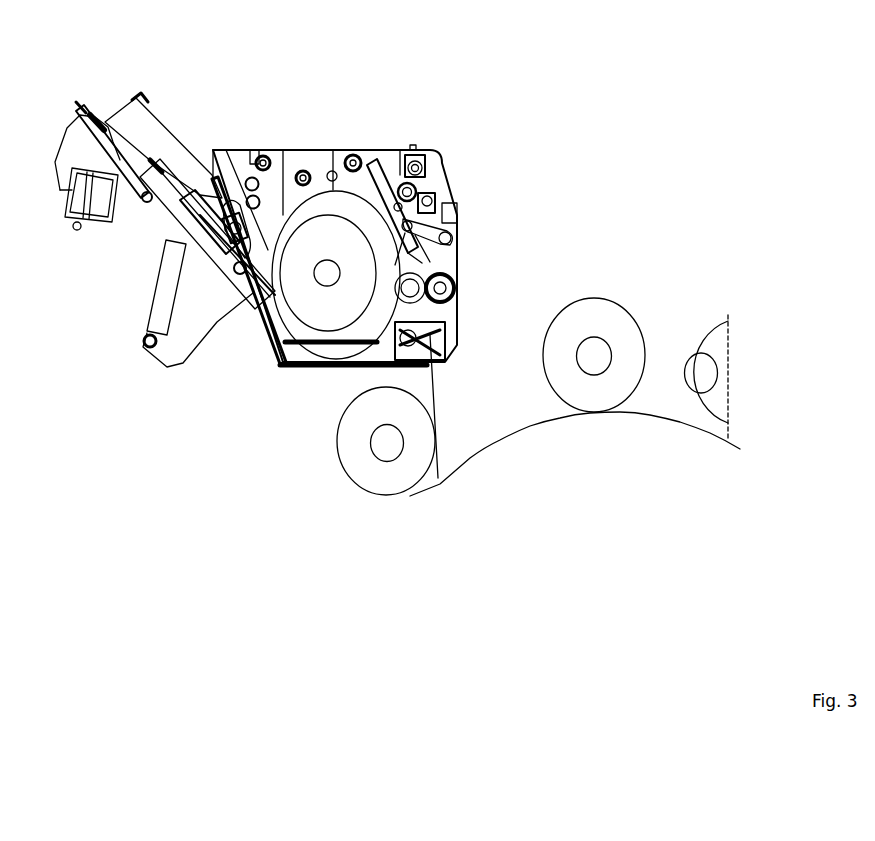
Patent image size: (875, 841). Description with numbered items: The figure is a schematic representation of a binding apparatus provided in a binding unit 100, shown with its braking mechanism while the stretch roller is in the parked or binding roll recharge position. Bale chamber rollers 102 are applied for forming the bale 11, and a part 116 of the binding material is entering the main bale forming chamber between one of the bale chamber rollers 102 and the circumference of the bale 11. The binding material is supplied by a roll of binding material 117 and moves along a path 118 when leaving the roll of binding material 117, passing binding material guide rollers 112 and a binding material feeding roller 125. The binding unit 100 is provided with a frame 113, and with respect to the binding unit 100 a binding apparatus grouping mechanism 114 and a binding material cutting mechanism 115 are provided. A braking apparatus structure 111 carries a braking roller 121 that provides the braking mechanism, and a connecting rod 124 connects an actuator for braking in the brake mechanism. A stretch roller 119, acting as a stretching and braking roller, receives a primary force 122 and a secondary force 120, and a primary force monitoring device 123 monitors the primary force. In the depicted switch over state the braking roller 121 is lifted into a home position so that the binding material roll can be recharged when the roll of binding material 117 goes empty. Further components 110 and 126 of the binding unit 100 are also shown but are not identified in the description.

The bale 11 is at (594, 482).
The binding unit 100 is at (335, 197).
The bale chamber rollers 102 is at (600, 320).
The cover plate 110 is at (167, 170).
The braking apparatus structure 111 is at (213, 190).
The binding material guide rollers 112 is at (263, 155).
The frame 113 is at (317, 170).
The binding apparatus grouping mechanism 114 is at (380, 170).
The binding material cutting mechanism 115 is at (392, 343).
The part of the binding material 116 is at (438, 473).
The roll of binding material 117 is at (315, 237).
The path 118 is at (257, 310).
The stretch roller 119 is at (233, 283).
The secondary force 120 is at (142, 343).
The braking roller 121 is at (213, 260).
The primary force 122 is at (150, 197).
The primary force monitoring device 123 is at (95, 122).
The connecting rod 124 is at (123, 153).
The binding material feeding roller 125 is at (433, 265).
The screw 126 is at (302, 170).